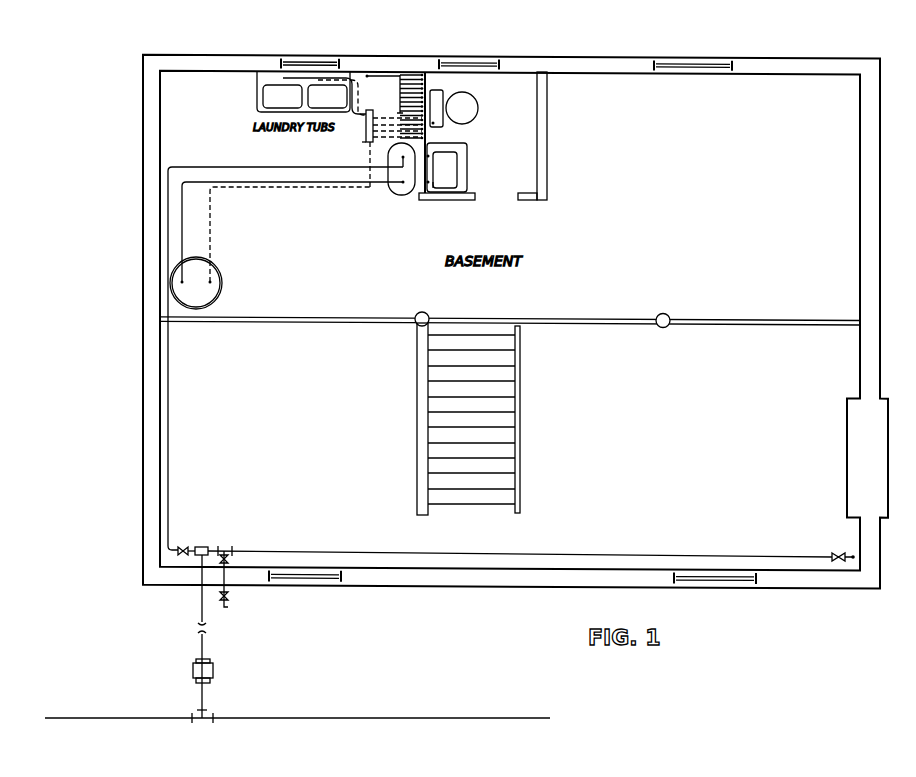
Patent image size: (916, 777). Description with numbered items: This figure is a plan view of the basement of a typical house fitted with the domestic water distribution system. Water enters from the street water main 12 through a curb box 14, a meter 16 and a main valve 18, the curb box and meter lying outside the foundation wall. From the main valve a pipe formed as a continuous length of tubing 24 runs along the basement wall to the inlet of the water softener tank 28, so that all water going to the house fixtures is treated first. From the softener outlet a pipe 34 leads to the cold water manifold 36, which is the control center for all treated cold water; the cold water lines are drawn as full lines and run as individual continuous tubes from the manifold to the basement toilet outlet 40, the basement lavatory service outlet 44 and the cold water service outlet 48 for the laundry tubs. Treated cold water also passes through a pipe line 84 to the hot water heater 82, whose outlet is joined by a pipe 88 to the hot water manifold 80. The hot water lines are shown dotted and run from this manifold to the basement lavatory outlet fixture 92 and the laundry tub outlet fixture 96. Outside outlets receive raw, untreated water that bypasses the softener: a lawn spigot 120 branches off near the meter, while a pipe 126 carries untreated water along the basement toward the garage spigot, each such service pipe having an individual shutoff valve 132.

The street water main 12 is at (306, 718).
The curb box 14 is at (192, 672).
The meter 16 is at (200, 557).
The main valve 18 is at (182, 553).
The continuous length of tubing 24 is at (170, 449).
The water softener tank 28 is at (388, 182).
The pipe 34 is at (396, 155).
The cold water manifold 36 is at (398, 89).
The basement toilet outlet 40 is at (450, 127).
The basement lavatory service outlet 44 is at (441, 192).
The cold water service outlet for the laundry tubs 48 is at (282, 76).
The hot water manifold 80 is at (364, 123).
The hot water heater 82 is at (222, 278).
The pipe line 84 is at (183, 237).
The pipe 88 is at (255, 190).
The basement lavatory outlet fixture 92 is at (433, 156).
The laundry tub outlet fixture 96 is at (318, 80).
The lawn spigot 120 is at (225, 609).
The pipe 126 is at (570, 553).
The shutoff valve 132 is at (838, 552).